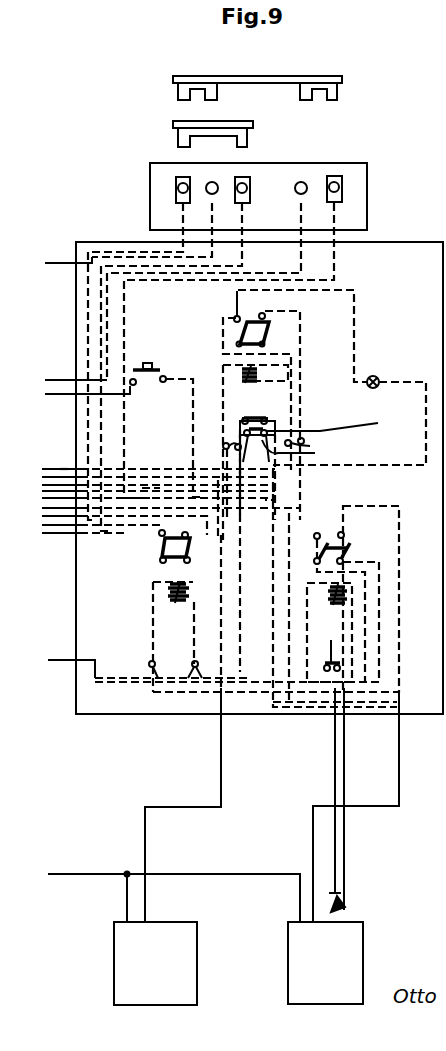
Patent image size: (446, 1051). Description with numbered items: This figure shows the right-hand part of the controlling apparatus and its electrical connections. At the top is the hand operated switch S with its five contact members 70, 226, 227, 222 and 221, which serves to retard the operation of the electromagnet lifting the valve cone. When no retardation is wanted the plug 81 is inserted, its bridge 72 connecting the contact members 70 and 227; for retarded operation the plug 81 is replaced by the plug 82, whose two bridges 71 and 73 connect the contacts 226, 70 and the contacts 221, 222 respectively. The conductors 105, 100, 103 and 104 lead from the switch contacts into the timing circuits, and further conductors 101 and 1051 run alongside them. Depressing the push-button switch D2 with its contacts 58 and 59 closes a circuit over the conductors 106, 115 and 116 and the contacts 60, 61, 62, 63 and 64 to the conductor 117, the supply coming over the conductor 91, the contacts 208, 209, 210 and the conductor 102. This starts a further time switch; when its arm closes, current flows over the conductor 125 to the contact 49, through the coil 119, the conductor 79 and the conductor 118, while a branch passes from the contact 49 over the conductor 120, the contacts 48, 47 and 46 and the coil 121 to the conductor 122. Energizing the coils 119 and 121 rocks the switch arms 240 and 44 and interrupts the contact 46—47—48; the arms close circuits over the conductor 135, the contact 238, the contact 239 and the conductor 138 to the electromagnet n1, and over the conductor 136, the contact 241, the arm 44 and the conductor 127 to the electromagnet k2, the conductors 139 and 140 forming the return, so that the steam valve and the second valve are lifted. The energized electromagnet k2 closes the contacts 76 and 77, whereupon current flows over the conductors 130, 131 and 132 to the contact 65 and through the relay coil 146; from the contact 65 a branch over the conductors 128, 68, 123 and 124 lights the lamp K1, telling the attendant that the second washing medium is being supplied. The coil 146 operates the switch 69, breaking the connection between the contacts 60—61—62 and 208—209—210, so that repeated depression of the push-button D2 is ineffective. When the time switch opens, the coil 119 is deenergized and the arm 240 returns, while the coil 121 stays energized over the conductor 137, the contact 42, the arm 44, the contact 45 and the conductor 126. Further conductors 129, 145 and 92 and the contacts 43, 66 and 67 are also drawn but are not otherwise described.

The plug 82 is at (253, 76).
The bridge 71 is at (198, 86).
The bridge 73 is at (316, 87).
The plug 81 is at (222, 121).
The bridge 72 is at (197, 136).
The hand operated switch S is at (258, 186).
The contact member 70 is at (176, 189).
The contact member 226 is at (213, 182).
The contact member 227 is at (250, 188).
The contact member 222 is at (302, 182).
The contact member 221 is at (340, 176).
The wire 1051 is at (212, 210).
The conductor 100 is at (180, 216).
The conductor 105 is at (56, 263).
The wire 101 is at (244, 212).
The conductor 103 is at (300, 212).
The conductor 104 is at (336, 222).
The conductor 115 is at (56, 394).
The push-button switch D2 is at (146, 357).
The contact 58 is at (134, 384).
The contact 59 is at (165, 377).
The conductor 116 is at (191, 379).
The conductor 123 is at (355, 291).
The lamp K1 is at (375, 375).
The conductor 124 is at (396, 465).
The contact 208 is at (334, 425).
The conductor 68 is at (235, 316).
The contact 67 is at (265, 313).
The switch 69 is at (253, 334).
The conductor 128 is at (223, 333).
The wire 129 is at (300, 316).
The relay coil 146 is at (256, 371).
The contact 61 is at (256, 417).
The contact 62 is at (242, 419).
The contact 60 is at (267, 419).
The contact 210 is at (244, 431).
The contact 64 is at (224, 448).
The contact 63 is at (236, 445).
The contact 66 is at (304, 440).
The contact 65 is at (311, 446).
The contact 209 is at (303, 451).
The conductor 106 is at (46, 469).
The conductor 117 is at (63, 469).
The conductor 102 is at (46, 477).
The conductor 135 is at (46, 509).
The wire 92 is at (145, 487).
The conductor 91 is at (150, 492).
The wire 145 is at (266, 496).
The conductor 132 is at (289, 513).
The contact 238 is at (161, 535).
The contact 239 is at (185, 532).
The switch arm 240 is at (160, 561).
The contact 241 is at (315, 537).
The switch arm 44 is at (331, 541).
The contact 42 is at (344, 535).
The contact 43 is at (315, 563).
The contact 45 is at (343, 560).
The conductor 137 is at (400, 513).
The conductor 126 is at (380, 634).
The coil 121 is at (336, 604).
The contact 47 is at (334, 643).
The contact 48 is at (325, 666).
The contact 46 is at (340, 666).
The coil 119 is at (186, 602).
The conductor 79 is at (150, 663).
The contact 49 is at (193, 663).
The conductor 125 is at (62, 660).
The conductor 136 is at (256, 551).
The conductor 130 is at (273, 572).
The conductor 118 is at (170, 722).
The conductor 120 is at (258, 682).
The conductor 122 is at (250, 707).
The conductor 138 is at (183, 807).
The conductor 131 is at (335, 750).
The contact 76 is at (342, 891).
The contact 77 is at (345, 907).
The conductor 127 is at (313, 836).
The conductor 140 is at (80, 874).
The conductor 139 is at (127, 898).
The electromagnet n1 is at (155, 963).
The electromagnet k2 is at (325, 963).